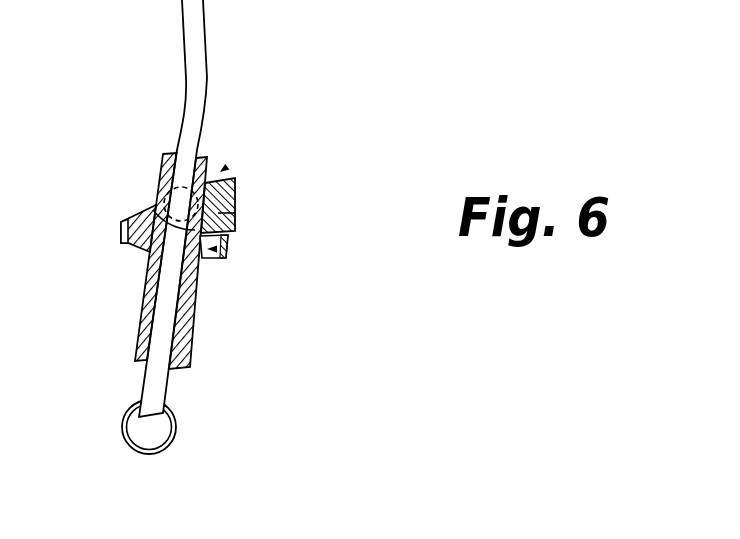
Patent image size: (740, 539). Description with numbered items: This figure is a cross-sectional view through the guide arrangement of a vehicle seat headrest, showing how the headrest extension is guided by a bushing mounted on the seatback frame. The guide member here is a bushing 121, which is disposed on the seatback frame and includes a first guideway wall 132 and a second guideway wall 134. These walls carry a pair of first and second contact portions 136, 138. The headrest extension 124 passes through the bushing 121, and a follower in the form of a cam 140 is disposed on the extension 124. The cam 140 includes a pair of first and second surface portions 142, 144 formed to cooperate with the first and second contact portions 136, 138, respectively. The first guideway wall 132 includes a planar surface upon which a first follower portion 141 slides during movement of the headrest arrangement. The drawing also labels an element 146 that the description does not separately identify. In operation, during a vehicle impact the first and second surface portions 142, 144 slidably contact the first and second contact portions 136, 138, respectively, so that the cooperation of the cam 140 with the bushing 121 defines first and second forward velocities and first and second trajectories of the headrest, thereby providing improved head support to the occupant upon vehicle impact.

The extension 124 is at (205, 126).
The second guideway wall 134 is at (226, 167).
The bushing 121 is at (236, 200).
The second contact portion 138 is at (236, 213).
The first surface portion 142 is at (203, 241).
The cam 140 is at (216, 249).
The second surface portion 144 is at (199, 312).
The first follower portion 141 is at (147, 270).
The first guideway wall 132 is at (122, 236).
The wedge face 146 is at (125, 222).
The first contact portion 136 is at (153, 210).